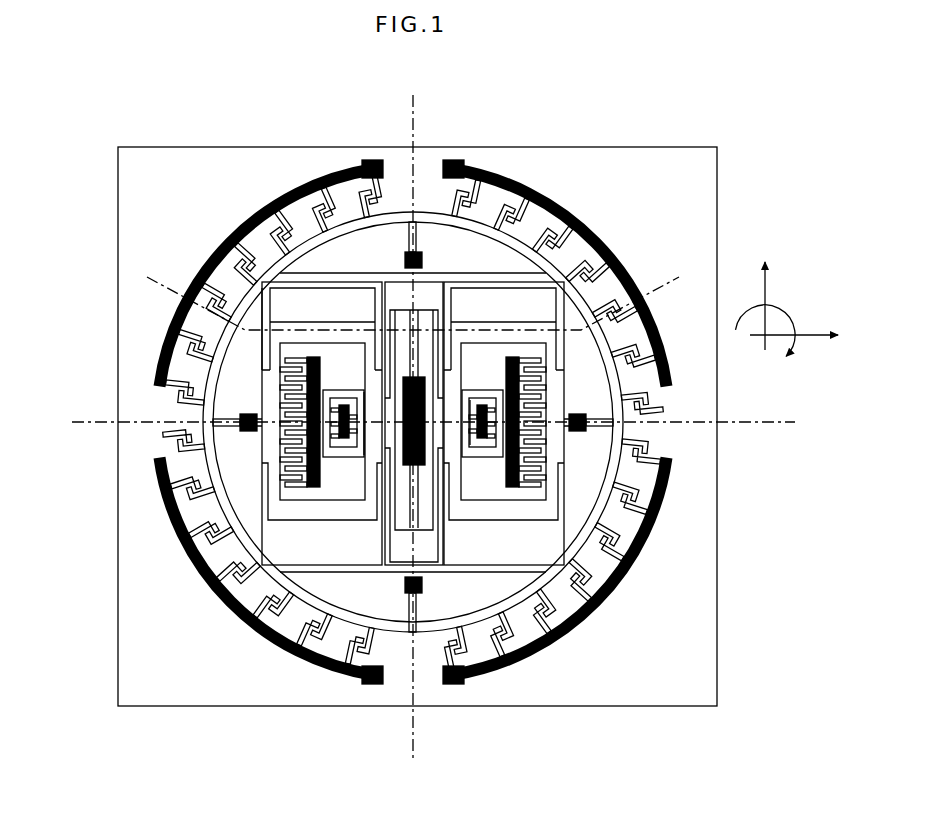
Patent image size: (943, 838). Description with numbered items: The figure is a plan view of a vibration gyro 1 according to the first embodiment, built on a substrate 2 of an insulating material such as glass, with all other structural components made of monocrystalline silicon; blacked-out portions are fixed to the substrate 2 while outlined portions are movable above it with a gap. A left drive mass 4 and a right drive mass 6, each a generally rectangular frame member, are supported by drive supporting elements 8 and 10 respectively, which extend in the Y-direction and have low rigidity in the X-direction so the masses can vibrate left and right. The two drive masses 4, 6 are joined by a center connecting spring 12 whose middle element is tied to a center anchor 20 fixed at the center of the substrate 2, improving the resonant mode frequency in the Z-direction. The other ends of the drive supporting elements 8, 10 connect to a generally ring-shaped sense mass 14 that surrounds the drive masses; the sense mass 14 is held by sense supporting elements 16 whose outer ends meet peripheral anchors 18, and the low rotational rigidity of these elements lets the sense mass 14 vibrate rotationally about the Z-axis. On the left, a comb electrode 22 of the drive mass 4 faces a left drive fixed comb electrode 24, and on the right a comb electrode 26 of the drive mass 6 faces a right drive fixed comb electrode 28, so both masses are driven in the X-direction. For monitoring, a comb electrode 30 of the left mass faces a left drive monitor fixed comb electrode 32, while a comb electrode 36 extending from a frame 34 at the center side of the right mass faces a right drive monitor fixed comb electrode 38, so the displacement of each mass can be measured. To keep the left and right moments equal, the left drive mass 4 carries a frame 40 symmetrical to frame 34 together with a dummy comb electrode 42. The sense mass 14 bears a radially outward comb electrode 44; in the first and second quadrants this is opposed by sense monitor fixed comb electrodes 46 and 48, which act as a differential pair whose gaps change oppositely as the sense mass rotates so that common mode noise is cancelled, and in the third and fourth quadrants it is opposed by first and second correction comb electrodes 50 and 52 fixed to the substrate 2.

The vibration gyro 1 is at (148, 122).
The substrate 2 is at (700, 648).
The drive mass 4 is at (320, 325).
The drive mass 6 is at (522, 340).
The drive supporting element 8 is at (265, 310).
The drive supporting element 10 is at (445, 305).
The center connecting spring 12 is at (390, 310).
The sense mass 14 is at (307, 244).
The sense supporting element 16 is at (223, 433).
The peripheral anchor 18 is at (587, 413).
The center anchor 20 is at (417, 467).
The comb electrode 22 is at (287, 370).
The left drive fixed comb electrode 24 is at (315, 490).
The comb electrode 26 is at (530, 368).
The right drive fixed comb electrode 28 is at (537, 462).
The comb electrode 30 is at (360, 407).
The left drive monitor fixed comb electrode 32 is at (360, 458).
The frame 34 is at (477, 388).
The comb electrode 36 is at (492, 403).
The right drive monitor fixed comb electrode 38 is at (482, 440).
The frame 40 is at (330, 458).
The dummy comb electrode 42 is at (348, 437).
The comb electrode 44 is at (436, 210).
The sense monitor fixed comb electrode 46 is at (530, 180).
The sense monitor fixed comb electrode 48 is at (238, 223).
The first correction comb electrode 50 is at (258, 623).
The second correction comb electrode 52 is at (607, 590).